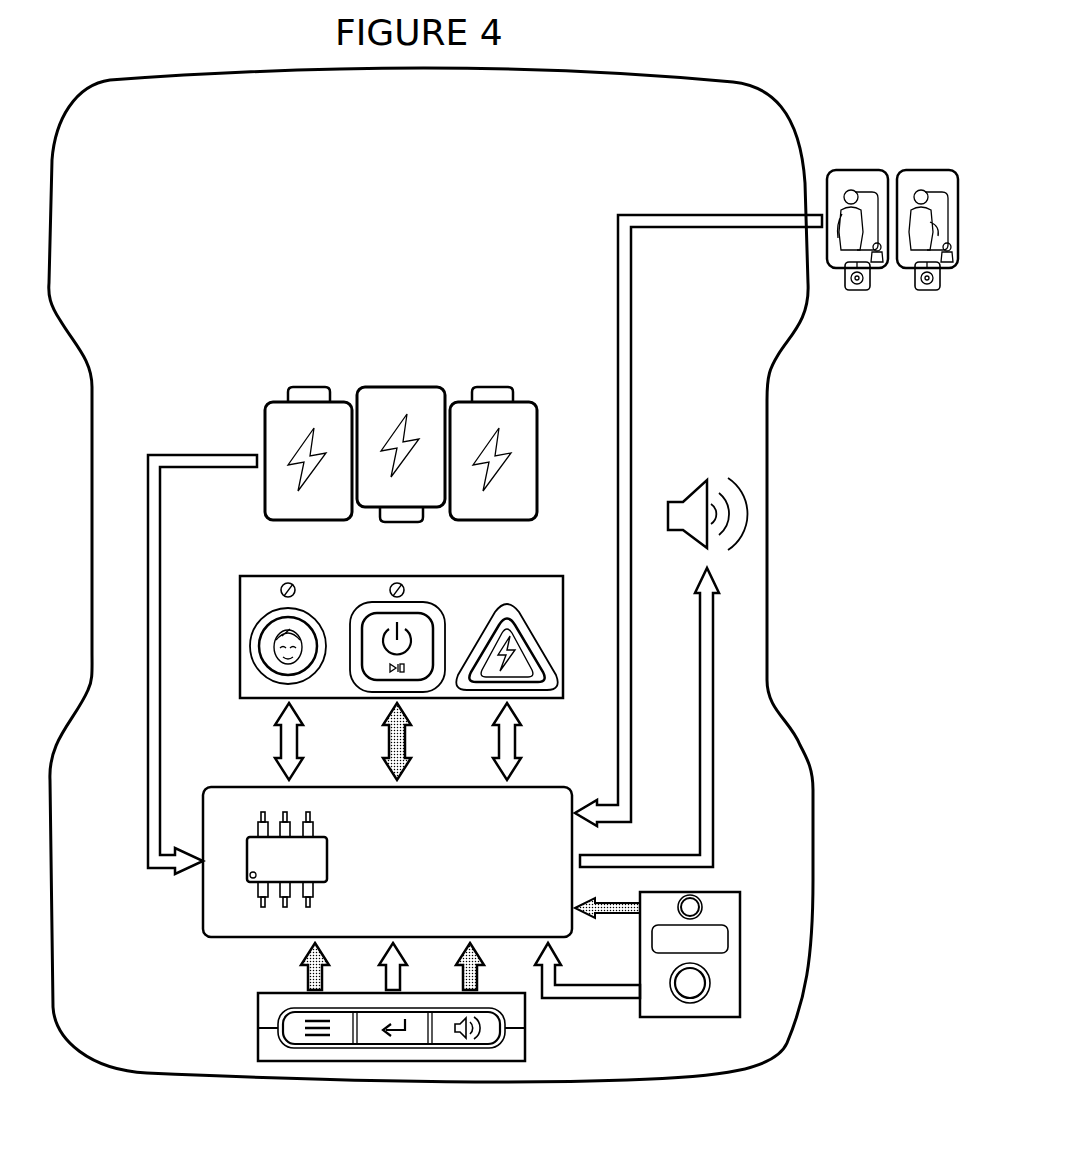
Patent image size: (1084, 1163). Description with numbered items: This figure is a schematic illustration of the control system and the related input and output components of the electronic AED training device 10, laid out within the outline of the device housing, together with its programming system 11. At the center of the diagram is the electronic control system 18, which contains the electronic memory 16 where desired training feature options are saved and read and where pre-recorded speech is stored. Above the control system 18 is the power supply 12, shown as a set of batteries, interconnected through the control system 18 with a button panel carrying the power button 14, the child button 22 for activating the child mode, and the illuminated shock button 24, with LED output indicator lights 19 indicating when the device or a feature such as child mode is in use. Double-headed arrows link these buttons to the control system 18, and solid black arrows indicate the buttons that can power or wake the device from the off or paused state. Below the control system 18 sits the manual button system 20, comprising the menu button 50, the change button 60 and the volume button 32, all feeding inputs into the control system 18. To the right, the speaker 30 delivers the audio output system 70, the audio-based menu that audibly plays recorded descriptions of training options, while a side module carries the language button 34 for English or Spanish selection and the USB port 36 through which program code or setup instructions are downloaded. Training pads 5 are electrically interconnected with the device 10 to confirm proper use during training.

The electronic AED training device 10 is at (431, 548).
The programming system 11 is at (172, 987).
The power supply 12 is at (265, 431).
The LED output indicator lights 19 is at (285, 583).
The power button 14 is at (412, 618).
The child button 22 is at (264, 648).
The shock button 24 is at (532, 648).
The control system 18 is at (357, 862).
The electronic memory 16 is at (328, 860).
The speaker 30 is at (705, 540).
The audio output system 70 is at (730, 566).
The training pads 5 is at (860, 170).
The language button 34 is at (702, 900).
The USB port 36 is at (698, 1003).
The manual button system 20 is at (429, 1061).
The menu button 50 is at (303, 1040).
The change button 60 is at (370, 1040).
The volume button 32 is at (480, 1040).